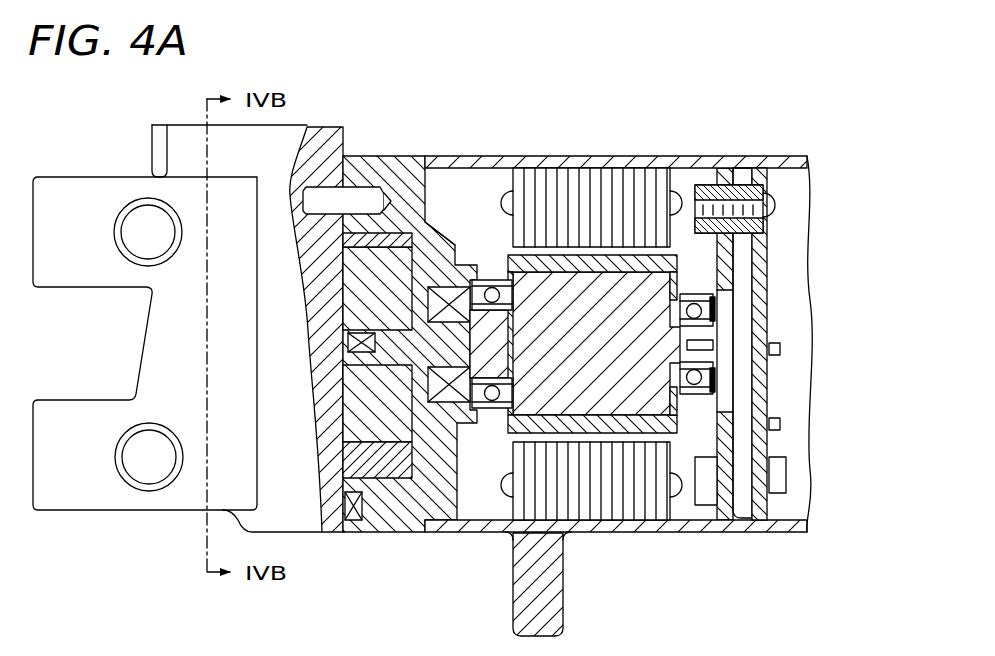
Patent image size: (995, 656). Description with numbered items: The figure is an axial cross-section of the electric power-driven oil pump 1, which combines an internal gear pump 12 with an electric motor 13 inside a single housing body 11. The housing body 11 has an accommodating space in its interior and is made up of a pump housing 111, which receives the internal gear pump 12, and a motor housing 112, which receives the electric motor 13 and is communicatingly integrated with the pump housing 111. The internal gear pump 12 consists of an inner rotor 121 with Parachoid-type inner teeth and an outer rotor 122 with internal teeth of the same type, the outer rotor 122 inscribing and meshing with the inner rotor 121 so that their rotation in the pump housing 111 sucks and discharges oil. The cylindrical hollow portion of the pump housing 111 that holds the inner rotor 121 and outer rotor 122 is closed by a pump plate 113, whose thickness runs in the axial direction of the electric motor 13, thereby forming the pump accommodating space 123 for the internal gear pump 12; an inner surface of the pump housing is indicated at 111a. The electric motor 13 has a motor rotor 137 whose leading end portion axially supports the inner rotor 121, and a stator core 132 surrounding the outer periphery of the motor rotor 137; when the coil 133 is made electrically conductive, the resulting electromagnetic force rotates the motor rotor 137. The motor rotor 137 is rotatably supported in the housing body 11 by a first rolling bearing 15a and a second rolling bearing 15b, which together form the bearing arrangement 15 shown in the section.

The electric power-driven oil pump 1 is at (711, 124).
The housing body 11 is at (490, 93).
The pump housing 111 is at (418, 153).
The housing inner surface 111a is at (431, 236).
The motor housing 112 is at (468, 153).
The pump plate 113 is at (300, 124).
The internal gear pump 12 is at (432, 574).
The inner rotor 121 is at (368, 425).
The outer rotor 122 is at (400, 468).
The pump accommodating space 123 is at (402, 222).
The electric motor 13 is at (534, 142).
The stator core 132 is at (583, 185).
The coil 133 is at (678, 162).
The motor rotor 137 is at (592, 400).
The bearing 15 is at (440, 283).
The first rolling bearing 15a is at (497, 283).
The second rolling bearing 15b is at (694, 294).